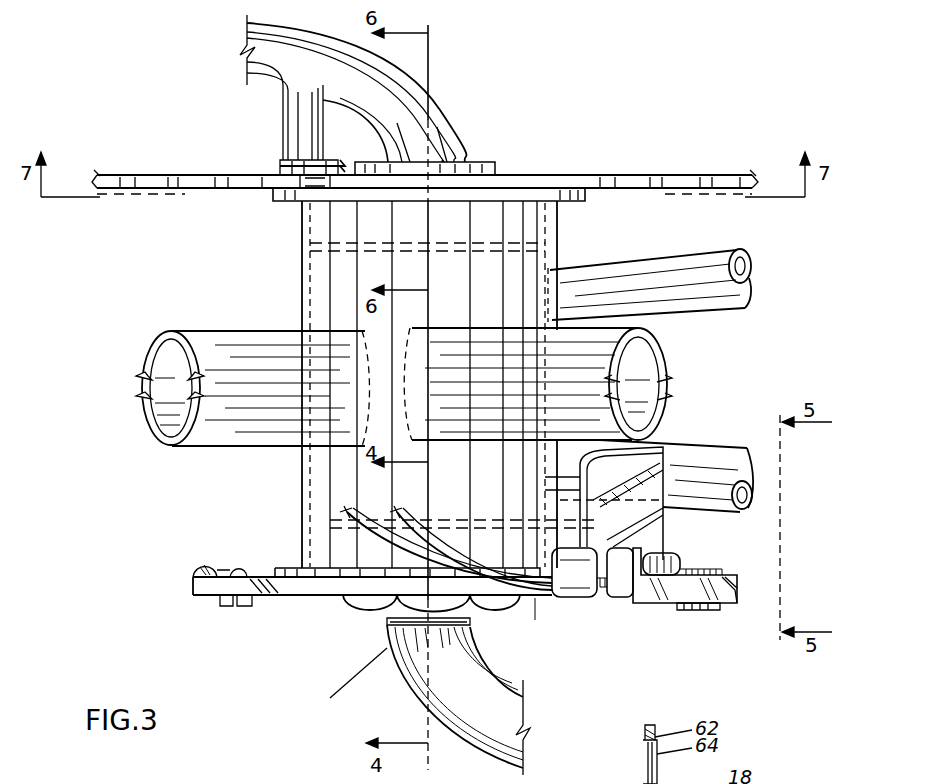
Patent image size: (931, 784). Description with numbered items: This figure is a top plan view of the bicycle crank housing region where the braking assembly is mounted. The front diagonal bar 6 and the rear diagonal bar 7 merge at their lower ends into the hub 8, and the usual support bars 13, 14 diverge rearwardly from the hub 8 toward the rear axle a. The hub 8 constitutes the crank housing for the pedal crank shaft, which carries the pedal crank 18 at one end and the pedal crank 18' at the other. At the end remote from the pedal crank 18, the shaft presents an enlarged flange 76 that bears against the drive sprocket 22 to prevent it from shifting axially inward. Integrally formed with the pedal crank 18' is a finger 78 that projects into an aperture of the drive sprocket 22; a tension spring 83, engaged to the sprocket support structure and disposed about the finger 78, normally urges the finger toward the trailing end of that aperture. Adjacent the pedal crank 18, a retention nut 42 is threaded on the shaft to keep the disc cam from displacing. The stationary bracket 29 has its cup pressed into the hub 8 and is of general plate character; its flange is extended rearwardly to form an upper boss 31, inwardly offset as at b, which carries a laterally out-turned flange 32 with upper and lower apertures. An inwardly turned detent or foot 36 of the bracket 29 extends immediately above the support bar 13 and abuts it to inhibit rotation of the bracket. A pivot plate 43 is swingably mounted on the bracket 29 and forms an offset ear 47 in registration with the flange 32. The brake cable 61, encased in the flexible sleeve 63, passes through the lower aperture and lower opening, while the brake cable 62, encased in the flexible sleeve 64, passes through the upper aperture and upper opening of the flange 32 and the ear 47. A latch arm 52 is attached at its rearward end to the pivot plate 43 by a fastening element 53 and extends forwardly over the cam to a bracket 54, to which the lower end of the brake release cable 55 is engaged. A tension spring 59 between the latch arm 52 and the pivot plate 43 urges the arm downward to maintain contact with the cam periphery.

The drive sprocket 22 is at (685, 174).
The pedal crank 18' is at (418, 88).
The enlarged flange 76 is at (493, 162).
The finger 78 is at (290, 172).
The tension spring 83 is at (305, 166).
The hub 8 is at (300, 313).
The front diagonal bar 6 is at (150, 362).
The rear diagonal bar 7 is at (665, 362).
The support bar 14 is at (752, 258).
The support bar 13 is at (755, 455).
The detent or foot 36 is at (655, 466).
The latch arm 52 is at (283, 596).
The bracket 54 is at (200, 571).
The brake release cable 55 is at (198, 586).
The retention nut 42 is at (360, 613).
The pedal crank 18 is at (430, 704).
The brake cable 62 is at (338, 516).
The brake cable 61 is at (430, 565).
The flexible sleeve 64 is at (425, 575).
The flexible sleeve 63 is at (400, 578).
The out-turned flange 32 is at (584, 599).
The upper boss 31 is at (612, 599).
The offset ear 47 is at (618, 604).
The tension spring 59 is at (682, 560).
The pivot plate 43 is at (722, 608).
The fastening element 53 is at (703, 612).
The rear axle a is at (372, 655).
The offset b is at (545, 600).
The stationary bracket 29 is at (533, 600).